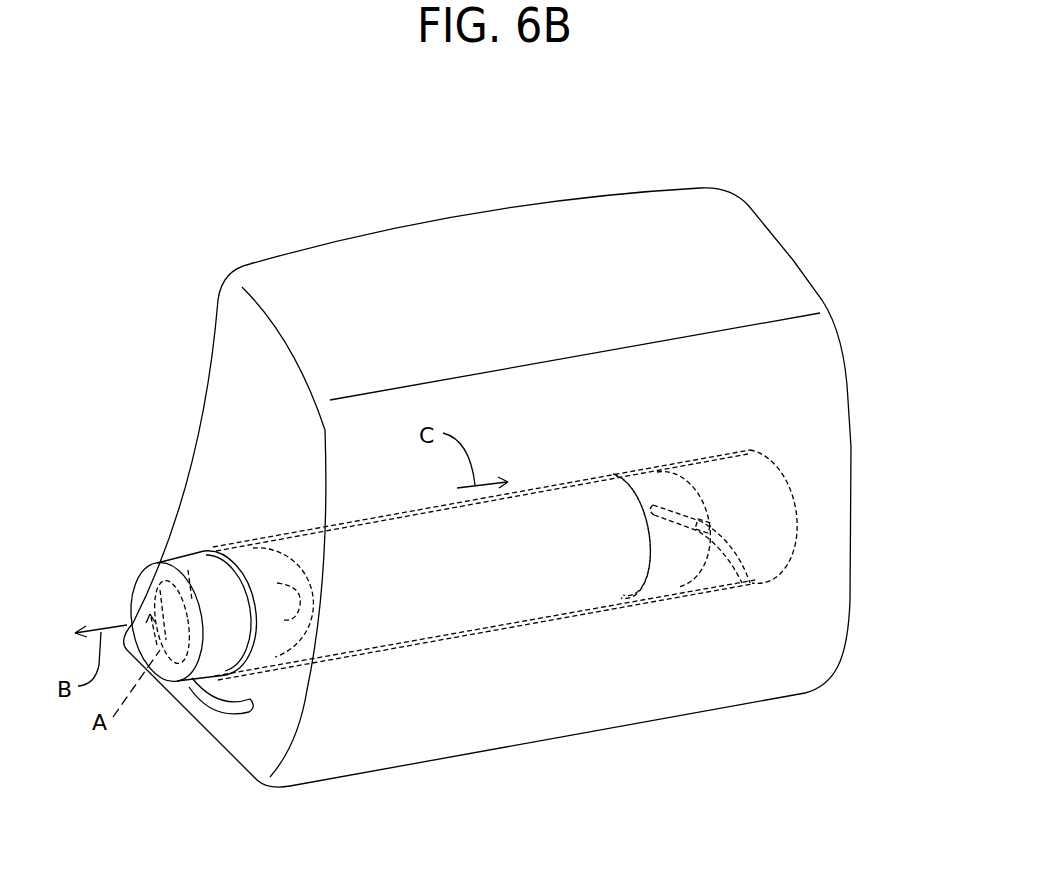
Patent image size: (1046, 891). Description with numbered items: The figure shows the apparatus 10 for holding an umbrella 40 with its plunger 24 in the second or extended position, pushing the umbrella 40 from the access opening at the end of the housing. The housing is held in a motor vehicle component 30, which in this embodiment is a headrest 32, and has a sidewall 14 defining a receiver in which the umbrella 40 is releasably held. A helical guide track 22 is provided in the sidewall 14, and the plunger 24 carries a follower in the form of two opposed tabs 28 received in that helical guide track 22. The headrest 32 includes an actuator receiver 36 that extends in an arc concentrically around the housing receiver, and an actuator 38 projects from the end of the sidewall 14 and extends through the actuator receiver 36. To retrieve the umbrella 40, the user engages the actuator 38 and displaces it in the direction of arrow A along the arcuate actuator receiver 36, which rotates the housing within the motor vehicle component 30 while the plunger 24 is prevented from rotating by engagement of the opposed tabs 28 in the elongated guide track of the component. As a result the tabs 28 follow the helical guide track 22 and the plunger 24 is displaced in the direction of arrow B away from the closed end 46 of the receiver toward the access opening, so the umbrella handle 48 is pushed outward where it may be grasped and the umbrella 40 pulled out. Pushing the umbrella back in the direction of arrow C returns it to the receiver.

The apparatus 10 is at (203, 217).
The motor vehicle component 30 is at (795, 207).
The headrest 32 is at (783, 280).
The closed end 46 is at (800, 553).
The sidewall 14 is at (533, 623).
The umbrella 40 is at (415, 630).
The plunger 24 is at (670, 573).
The opposed tabs 28 is at (705, 524).
The helical guide track 22 is at (743, 557).
The actuator receiver 36 is at (230, 710).
The umbrella handle 48 is at (188, 570).
The actuator 38 is at (147, 565).